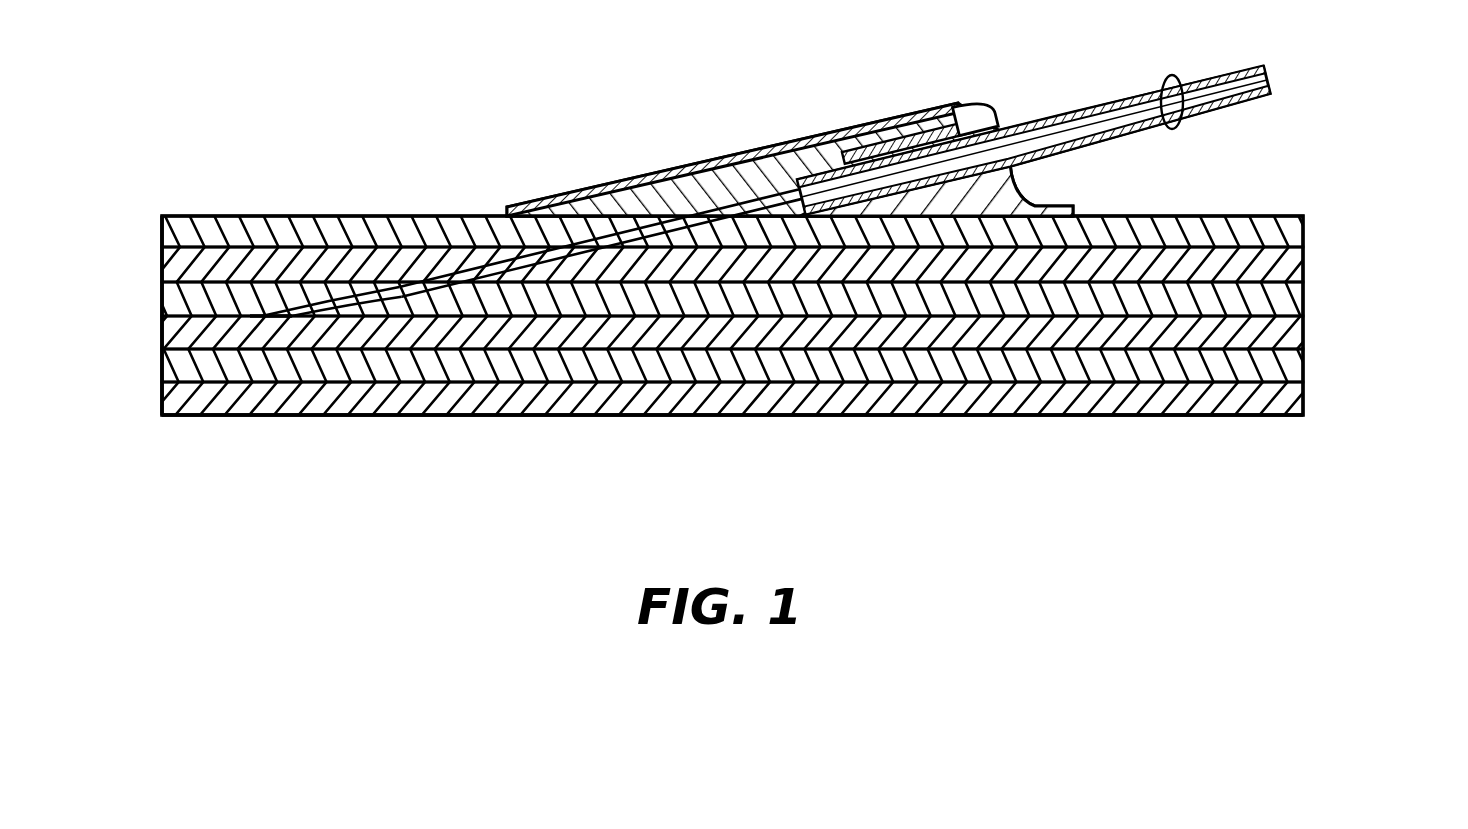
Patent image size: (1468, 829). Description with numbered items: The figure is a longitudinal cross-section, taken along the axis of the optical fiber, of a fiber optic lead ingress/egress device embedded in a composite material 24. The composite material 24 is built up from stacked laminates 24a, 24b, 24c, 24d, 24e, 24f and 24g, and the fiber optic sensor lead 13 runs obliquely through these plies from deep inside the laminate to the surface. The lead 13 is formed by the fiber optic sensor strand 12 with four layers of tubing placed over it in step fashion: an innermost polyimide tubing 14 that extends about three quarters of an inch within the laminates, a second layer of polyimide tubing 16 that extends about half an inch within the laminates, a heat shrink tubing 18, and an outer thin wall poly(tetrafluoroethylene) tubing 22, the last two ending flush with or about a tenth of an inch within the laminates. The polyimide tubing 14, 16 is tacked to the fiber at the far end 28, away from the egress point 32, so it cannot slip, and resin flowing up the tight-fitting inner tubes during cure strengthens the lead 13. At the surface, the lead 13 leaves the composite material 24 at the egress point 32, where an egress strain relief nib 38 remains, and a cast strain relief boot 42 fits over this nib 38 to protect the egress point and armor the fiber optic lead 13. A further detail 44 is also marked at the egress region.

The fiber optic sensor strand 12 is at (172, 320).
The fiber optic sensor lead 13 is at (1172, 77).
The innermost polyimide tubing 14 is at (347, 314).
The second layer of polyimide tubing 16 is at (527, 265).
The heat shrink tubing 18 is at (748, 218).
The thin wall poly(tetrafluoroethylene) tubing 22 is at (843, 167).
The composite material 24 is at (785, 313).
The laminate 24a is at (1203, 215).
The laminate 24b is at (1280, 258).
The laminate 24c is at (1287, 302).
The laminate 24d is at (1297, 335).
The laminate 24e is at (1300, 367).
The laminate 24f is at (1287, 403).
The laminate 24g is at (1160, 417).
The far end 28 is at (253, 316).
The egress point 32 is at (1013, 127).
The egress strain relief nib 38 is at (723, 162).
The strain relief boot 42 is at (767, 152).
The collar 44 is at (993, 120).